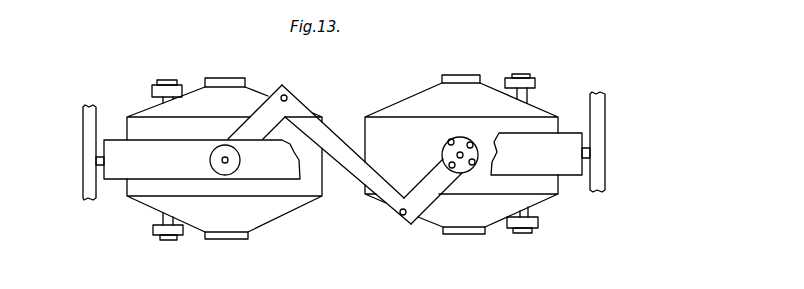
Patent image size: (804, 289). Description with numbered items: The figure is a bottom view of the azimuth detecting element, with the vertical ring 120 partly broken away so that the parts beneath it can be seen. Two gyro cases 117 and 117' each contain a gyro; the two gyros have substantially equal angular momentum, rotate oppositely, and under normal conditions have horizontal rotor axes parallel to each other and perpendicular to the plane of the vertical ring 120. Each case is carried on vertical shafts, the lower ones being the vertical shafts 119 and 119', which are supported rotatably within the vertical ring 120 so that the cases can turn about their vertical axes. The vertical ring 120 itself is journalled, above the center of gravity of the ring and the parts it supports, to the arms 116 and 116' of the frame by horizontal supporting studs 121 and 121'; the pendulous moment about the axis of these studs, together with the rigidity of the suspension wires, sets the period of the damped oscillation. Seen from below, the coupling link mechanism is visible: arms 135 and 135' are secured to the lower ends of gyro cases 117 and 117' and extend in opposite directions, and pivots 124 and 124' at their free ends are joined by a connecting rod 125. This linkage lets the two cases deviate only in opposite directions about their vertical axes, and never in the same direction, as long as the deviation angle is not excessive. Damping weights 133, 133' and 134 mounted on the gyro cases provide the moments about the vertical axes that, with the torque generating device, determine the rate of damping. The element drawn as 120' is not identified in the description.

The arm 116 is at (74, 152).
The arm 116' is at (615, 142).
The gyro case 117 is at (224, 163).
The gyro case 117' is at (461, 153).
The vertical shaft 119 is at (207, 160).
The vertical shaft 119' is at (438, 155).
The vertical ring 120 is at (198, 188).
The arm bar 120' is at (553, 175).
The horizontal supporting stud 121 is at (83, 197).
The horizontal supporting stud 121' is at (614, 157).
The pivot 124 is at (280, 108).
The pivot 124' is at (413, 210).
The connecting rod 125 is at (332, 140).
The damping weight 133 is at (158, 242).
The damping weight 133' is at (546, 226).
The damping weight 134 is at (158, 88).
The arm 135 is at (272, 77).
The arm 135' is at (434, 235).